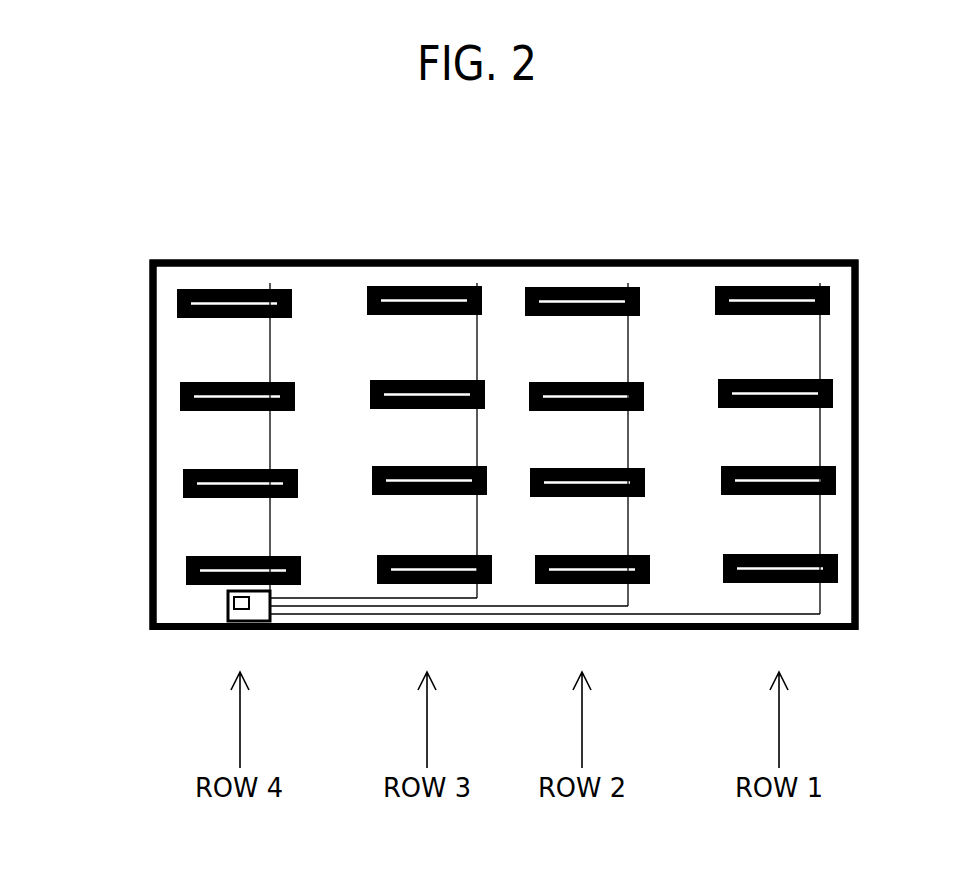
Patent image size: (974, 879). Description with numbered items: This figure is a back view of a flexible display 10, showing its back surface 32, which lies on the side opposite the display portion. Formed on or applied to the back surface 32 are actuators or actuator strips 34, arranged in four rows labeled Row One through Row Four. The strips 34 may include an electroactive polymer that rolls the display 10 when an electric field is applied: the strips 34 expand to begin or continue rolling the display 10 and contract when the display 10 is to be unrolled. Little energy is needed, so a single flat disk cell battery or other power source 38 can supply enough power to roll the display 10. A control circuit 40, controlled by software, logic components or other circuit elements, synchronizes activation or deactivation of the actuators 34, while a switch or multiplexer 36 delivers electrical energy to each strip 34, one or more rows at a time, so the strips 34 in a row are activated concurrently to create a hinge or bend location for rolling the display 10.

The display 10 is at (103, 166).
The back surface 32 is at (684, 290).
The actuator strips 34 is at (292, 300).
The switch or multiplexer 36 is at (230, 625).
The power source 38 is at (232, 602).
The control circuit 40 is at (806, 617).